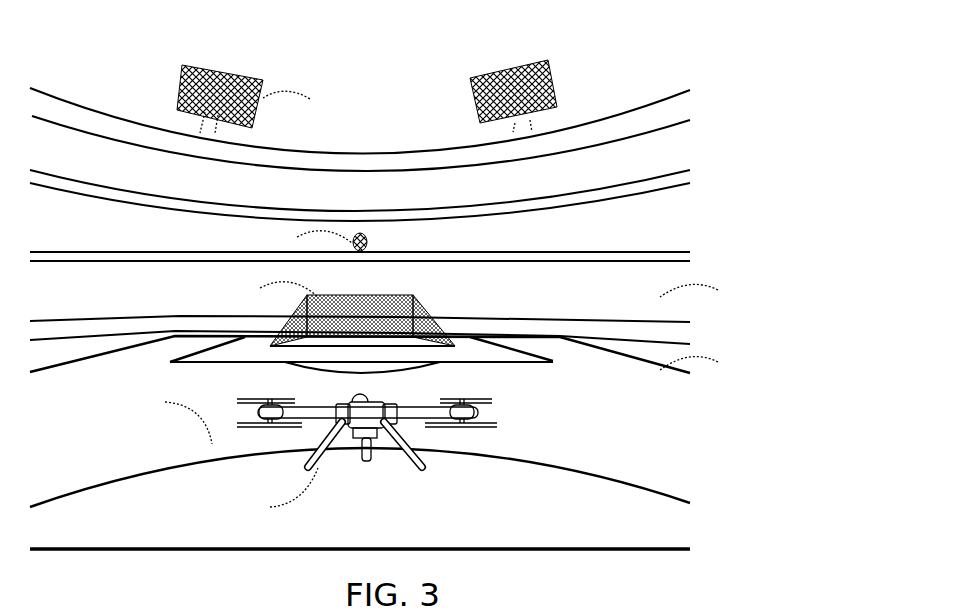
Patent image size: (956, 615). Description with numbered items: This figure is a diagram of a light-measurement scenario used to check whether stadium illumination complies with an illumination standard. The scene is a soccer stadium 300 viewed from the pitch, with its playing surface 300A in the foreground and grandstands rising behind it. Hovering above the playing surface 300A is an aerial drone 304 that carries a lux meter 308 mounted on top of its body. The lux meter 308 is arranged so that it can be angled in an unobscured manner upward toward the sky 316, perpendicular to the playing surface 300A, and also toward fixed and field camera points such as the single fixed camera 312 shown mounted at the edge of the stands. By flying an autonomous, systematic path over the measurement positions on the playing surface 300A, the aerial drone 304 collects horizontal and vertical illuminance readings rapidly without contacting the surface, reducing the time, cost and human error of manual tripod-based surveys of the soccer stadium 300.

The soccer stadium 300 is at (756, 118).
The playing surface 300A is at (360, 452).
The aerial drone 304 is at (512, 411).
The lux meter 308 is at (366, 389).
The fixed camera 312 is at (260, 237).
The sky 316 is at (379, 57).